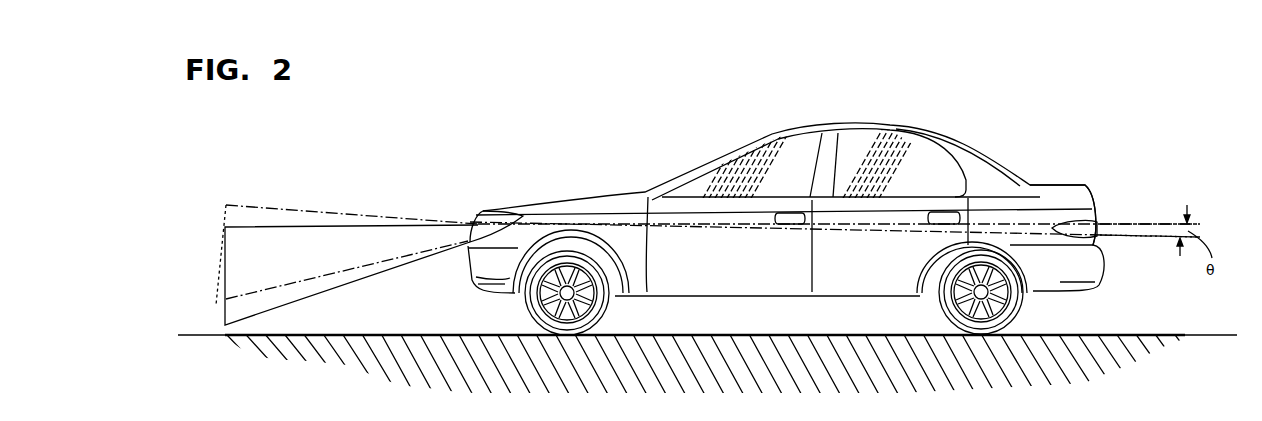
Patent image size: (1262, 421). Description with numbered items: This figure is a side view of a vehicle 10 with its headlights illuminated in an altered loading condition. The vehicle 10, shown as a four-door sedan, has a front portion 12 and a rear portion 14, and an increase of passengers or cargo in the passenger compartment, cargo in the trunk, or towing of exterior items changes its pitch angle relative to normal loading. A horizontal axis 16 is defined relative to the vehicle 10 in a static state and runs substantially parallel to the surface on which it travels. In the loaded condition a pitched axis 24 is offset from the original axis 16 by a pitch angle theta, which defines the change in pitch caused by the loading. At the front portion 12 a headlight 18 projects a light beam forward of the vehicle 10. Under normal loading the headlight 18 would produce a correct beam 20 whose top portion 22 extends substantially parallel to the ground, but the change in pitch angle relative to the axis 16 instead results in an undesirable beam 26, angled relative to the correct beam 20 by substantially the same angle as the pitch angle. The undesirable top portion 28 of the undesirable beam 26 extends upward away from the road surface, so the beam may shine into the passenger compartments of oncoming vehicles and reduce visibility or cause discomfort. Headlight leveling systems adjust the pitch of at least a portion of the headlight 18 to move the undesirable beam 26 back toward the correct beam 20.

The vehicle 10 is at (955, 137).
The front portion 12 is at (488, 301).
The rear portion 14 is at (1081, 177).
The horizontal axis 16 is at (1133, 221).
The headlight 18 is at (501, 229).
The correct beam 20 is at (313, 290).
The top portion 22 is at (383, 226).
The pitched axis 24 is at (1135, 241).
The undesirable beam 26 is at (273, 208).
The undesirable top portion 28 is at (322, 211).